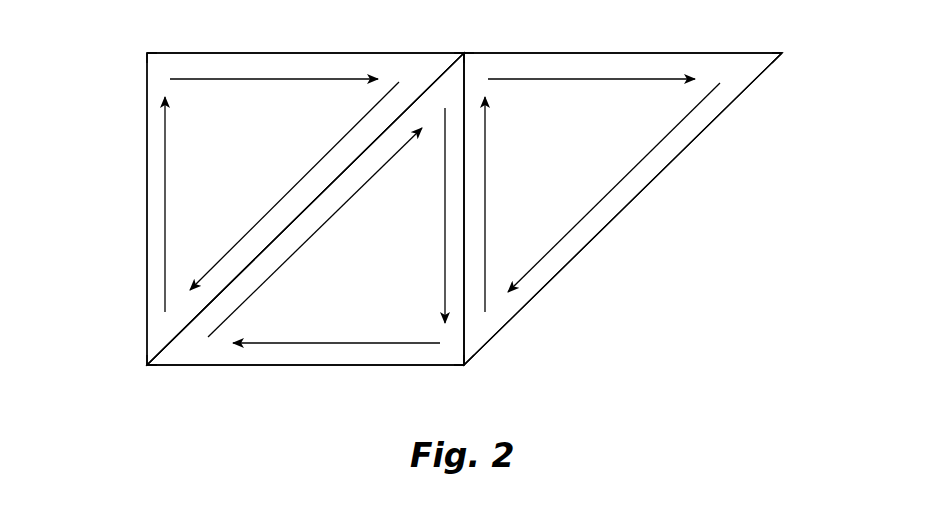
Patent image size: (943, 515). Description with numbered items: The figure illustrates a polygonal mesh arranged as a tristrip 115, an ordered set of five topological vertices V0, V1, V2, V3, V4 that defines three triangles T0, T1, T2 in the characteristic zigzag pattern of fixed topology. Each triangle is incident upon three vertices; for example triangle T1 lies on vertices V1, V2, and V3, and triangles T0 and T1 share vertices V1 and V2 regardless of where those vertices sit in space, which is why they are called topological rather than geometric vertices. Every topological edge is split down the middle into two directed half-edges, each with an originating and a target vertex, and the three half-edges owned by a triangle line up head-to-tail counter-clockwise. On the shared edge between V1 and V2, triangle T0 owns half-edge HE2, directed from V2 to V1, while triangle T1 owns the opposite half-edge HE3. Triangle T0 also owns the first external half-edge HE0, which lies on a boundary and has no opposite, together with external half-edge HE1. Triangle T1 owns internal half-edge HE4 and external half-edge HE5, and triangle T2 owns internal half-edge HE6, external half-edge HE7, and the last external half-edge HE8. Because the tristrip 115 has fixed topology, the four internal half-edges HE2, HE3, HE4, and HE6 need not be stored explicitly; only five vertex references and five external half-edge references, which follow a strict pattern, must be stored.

The tristrip 115 is at (146, 210).
The topological vertex V0 is at (155, 42).
The topological vertex V1 is at (142, 378).
The topological vertex V2 is at (465, 42).
The topological vertex V3 is at (465, 378).
The topological vertex V4 is at (796, 42).
The half-edge HE0 is at (186, 204).
The half-edge HE1 is at (274, 94).
The half-edge HE2 is at (294, 186).
The half-edge HE3 is at (315, 232).
The half-edge HE4 is at (419, 215).
The half-edge HE5 is at (336, 327).
The half-edge HE6 is at (508, 204).
The half-edge HE7 is at (591, 94).
The half-edge HE8 is at (614, 187).
The triangle T0 is at (263, 162).
The triangle T1 is at (378, 278).
The triangle T2 is at (573, 162).